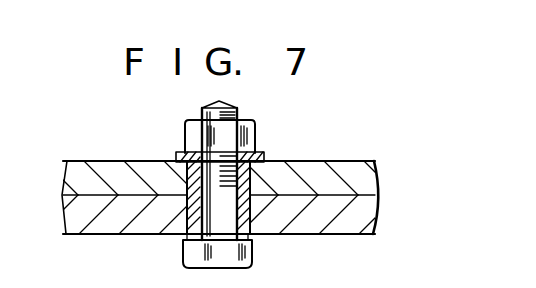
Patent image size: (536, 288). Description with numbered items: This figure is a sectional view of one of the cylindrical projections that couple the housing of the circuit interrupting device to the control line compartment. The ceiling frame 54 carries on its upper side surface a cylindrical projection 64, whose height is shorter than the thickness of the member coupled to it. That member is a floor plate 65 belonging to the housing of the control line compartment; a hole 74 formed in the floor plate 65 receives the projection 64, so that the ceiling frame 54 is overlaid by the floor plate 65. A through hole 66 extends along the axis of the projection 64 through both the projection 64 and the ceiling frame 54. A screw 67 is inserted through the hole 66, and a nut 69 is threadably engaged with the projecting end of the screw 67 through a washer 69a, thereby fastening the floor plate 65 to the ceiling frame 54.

The ceiling frame 54 is at (305, 234).
The cylindrical projection 64 is at (264, 172).
The floor plate 65 is at (378, 172).
The through hole 66 is at (202, 196).
The screw 67 is at (251, 240).
The nut 69 is at (249, 128).
The washer 69a is at (176, 152).
The hole 74 is at (157, 161).